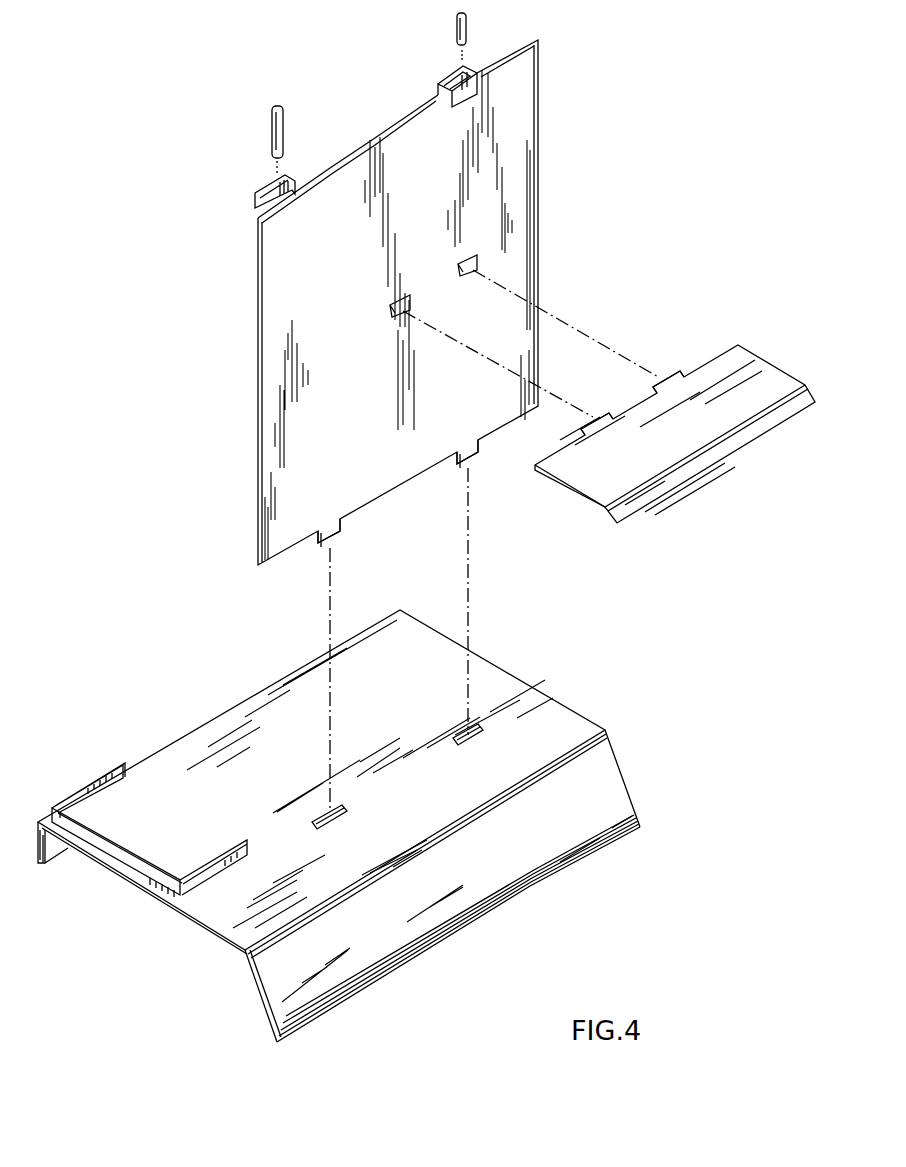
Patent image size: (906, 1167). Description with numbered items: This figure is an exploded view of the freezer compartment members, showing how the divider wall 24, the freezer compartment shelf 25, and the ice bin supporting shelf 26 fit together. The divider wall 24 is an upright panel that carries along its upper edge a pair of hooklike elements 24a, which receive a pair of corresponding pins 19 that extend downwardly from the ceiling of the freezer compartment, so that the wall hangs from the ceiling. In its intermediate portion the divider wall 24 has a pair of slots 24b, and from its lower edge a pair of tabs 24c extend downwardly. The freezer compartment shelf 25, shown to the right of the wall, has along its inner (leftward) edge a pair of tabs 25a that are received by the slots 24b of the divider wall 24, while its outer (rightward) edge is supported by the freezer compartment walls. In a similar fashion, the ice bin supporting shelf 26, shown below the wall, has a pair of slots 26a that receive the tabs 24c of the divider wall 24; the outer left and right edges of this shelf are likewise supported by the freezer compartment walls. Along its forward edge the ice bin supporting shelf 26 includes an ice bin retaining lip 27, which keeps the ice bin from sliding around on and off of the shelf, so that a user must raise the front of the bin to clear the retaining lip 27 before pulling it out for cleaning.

The pins 19 is at (468, 24).
The divider wall 24 is at (273, 288).
The hooklike elements 24a is at (243, 201).
The slots 24b is at (408, 303).
The tabs 24c is at (457, 463).
The freezer compartment shelf 25 is at (667, 453).
The tabs 25a is at (658, 382).
The ice bin supporting shelf 26 is at (233, 920).
The slots 26a is at (342, 810).
The ice bin retaining lip 27 is at (117, 853).